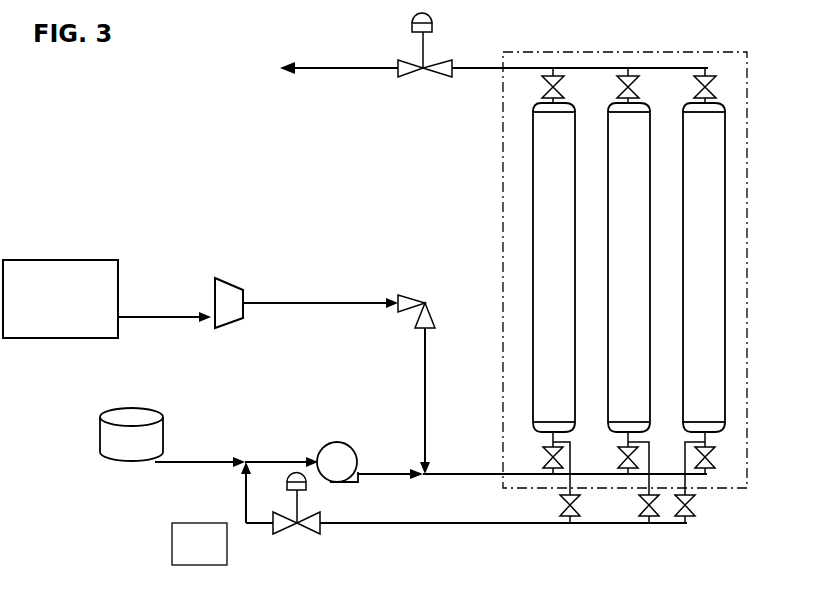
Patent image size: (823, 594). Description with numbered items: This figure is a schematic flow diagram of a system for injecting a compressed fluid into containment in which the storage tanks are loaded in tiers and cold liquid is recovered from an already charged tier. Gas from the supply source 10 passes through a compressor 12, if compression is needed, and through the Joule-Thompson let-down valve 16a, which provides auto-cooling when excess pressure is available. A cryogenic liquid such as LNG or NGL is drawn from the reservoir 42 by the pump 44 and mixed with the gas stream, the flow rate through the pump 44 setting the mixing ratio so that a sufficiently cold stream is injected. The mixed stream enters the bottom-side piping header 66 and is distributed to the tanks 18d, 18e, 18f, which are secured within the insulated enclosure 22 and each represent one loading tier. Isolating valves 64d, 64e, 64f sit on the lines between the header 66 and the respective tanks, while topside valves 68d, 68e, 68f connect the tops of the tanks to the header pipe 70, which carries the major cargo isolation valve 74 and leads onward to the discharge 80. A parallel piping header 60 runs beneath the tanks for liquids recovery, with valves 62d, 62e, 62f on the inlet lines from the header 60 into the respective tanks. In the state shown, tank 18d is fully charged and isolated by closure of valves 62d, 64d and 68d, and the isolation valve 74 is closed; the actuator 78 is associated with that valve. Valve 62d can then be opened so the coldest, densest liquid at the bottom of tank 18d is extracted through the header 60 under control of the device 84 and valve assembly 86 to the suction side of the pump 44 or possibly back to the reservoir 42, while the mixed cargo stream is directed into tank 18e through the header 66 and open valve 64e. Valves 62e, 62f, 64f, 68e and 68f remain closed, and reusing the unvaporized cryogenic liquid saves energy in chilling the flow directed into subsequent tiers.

The supply source 10 is at (60, 299).
The compressor 12 is at (235, 285).
The Joule-Thompson let-down valve 16a is at (425, 303).
The tank 18d is at (533, 232).
The tank 18e is at (647, 205).
The tank 18f is at (724, 290).
The insulated enclosure 22 is at (750, 350).
The reservoir 42 is at (100, 438).
The pump 44 is at (337, 442).
The parallel piping header 60 is at (430, 523).
The valve 62d is at (562, 503).
The valve 62e is at (655, 510).
The valve 62f is at (690, 505).
The isolating valve 64d is at (545, 455).
The isolating valve 64e is at (620, 462).
The isolating valve 64f is at (712, 455).
The piping header 66 is at (493, 474).
The topside valve 68d is at (562, 82).
The topside valve 68e is at (638, 82).
The topside valve 68f is at (715, 85).
The header pipe 70 is at (470, 68).
The major cargo isolation valve 74 is at (398, 76).
The valve actuator 78 is at (412, 30).
The outlet flow 80 is at (330, 70).
The device 84 is at (302, 490).
The valve assembly 86 is at (273, 525).